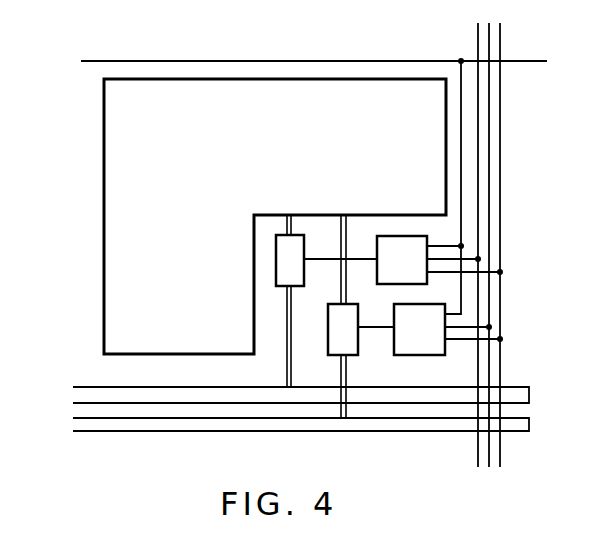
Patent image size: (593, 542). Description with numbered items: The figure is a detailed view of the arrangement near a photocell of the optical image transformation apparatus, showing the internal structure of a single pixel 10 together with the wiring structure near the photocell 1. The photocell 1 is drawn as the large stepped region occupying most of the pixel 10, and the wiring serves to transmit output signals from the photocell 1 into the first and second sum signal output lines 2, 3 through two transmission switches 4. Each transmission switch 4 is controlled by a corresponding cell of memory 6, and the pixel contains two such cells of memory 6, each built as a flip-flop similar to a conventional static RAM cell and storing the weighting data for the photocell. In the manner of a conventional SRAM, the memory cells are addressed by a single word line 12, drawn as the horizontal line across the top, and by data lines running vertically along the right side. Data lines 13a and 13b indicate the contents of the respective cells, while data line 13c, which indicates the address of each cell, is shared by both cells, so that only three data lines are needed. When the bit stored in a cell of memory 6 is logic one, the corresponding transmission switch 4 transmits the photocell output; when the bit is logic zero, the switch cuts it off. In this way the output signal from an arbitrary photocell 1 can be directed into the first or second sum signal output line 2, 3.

The photocell 1 is at (447, 99).
The first sum signal output line 2 is at (529, 396).
The second sum signal output line 3 is at (529, 425).
The transmission switch 4 is at (276, 260).
The memory 6 is at (403, 235).
The pixel 10 is at (90, 261).
The word line 12 is at (275, 60).
The data line 13a is at (480, 128).
The data line 13b is at (491, 157).
The data line 13c is at (502, 185).